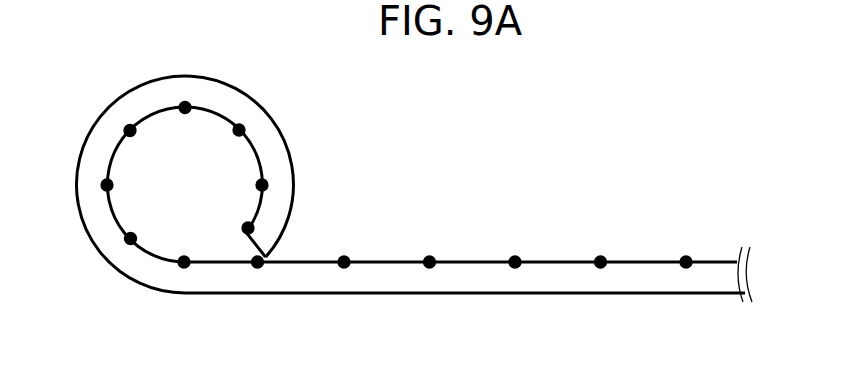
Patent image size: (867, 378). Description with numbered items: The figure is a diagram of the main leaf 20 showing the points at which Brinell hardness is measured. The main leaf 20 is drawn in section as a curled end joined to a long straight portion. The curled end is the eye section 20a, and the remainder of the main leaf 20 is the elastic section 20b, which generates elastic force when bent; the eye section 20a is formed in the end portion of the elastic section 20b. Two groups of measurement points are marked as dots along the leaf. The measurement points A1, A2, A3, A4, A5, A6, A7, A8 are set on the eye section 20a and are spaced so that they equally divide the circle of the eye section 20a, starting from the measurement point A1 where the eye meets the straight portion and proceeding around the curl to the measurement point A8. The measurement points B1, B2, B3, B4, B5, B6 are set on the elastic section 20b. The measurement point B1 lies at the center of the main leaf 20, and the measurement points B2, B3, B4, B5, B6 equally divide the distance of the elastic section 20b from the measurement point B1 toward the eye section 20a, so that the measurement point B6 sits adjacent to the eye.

The main leaf 20 is at (423, 117).
The eye section 20a is at (237, 88).
The elastic section 20b is at (478, 260).
The measurement point A1 is at (184, 262).
The measurement point A2 is at (130, 239).
The measurement point A3 is at (107, 185).
The measurement point A4 is at (130, 130).
The measurement point A5 is at (185, 108).
The measurement point A6 is at (239, 130).
The measurement point A7 is at (262, 185).
The measurement point A8 is at (248, 228).
The measurement point B1 is at (686, 262).
The measurement point B2 is at (601, 262).
The measurement point B3 is at (515, 262).
The measurement point B4 is at (429, 262).
The measurement point B5 is at (344, 262).
The measurement point B6 is at (257, 262).